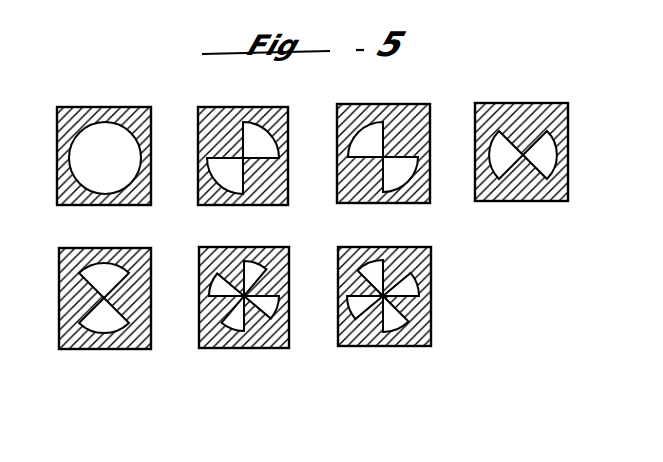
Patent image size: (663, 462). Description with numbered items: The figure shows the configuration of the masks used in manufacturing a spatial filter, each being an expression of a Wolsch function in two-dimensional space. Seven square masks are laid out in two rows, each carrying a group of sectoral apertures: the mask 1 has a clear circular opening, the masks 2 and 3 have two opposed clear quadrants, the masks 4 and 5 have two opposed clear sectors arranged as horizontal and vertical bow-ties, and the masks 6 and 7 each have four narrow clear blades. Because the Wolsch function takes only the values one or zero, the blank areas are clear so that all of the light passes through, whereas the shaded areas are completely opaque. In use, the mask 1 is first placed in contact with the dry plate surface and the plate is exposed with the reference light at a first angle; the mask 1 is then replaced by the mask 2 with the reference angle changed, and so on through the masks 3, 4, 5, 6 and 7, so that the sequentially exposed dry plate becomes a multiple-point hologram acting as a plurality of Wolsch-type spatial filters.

The mask 1 is at (104, 173).
The mask 2 is at (243, 173).
The mask 3 is at (383, 172).
The mask 4 is at (521, 172).
The mask 5 is at (105, 320).
The mask 6 is at (244, 320).
The mask 7 is at (384, 318).